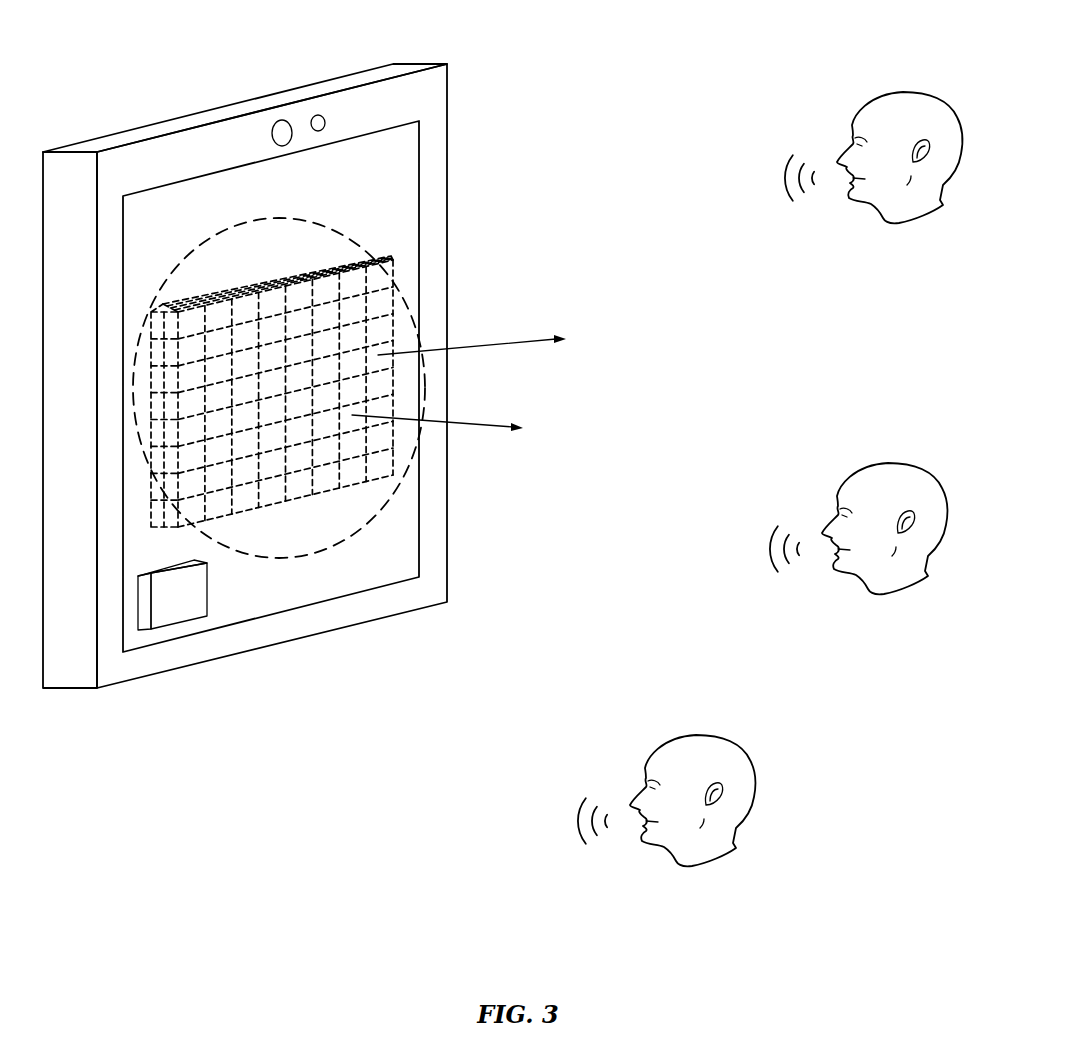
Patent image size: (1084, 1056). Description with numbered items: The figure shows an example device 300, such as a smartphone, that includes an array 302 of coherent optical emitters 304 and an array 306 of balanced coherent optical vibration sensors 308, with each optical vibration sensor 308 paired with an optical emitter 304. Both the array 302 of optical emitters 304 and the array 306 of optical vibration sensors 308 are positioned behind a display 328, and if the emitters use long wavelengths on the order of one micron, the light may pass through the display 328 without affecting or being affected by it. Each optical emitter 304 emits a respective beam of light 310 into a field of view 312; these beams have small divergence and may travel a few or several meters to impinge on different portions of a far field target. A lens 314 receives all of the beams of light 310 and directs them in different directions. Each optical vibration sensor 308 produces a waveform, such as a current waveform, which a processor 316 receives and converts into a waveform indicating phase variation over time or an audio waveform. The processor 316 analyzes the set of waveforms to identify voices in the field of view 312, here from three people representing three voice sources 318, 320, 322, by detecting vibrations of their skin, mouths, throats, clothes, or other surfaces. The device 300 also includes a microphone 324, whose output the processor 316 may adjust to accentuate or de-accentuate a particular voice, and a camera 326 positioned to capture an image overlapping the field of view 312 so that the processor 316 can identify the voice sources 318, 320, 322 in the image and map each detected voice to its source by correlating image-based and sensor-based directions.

The device 300 is at (166, 118).
The array of coherent optical emitters 302 is at (140, 403).
The coherent optical emitter 304 is at (150, 512).
The array of balanced coherent optical vibration sensors 306 is at (152, 433).
The balanced coherent optical vibration sensor 308 is at (164, 491).
The beam of light 310 is at (510, 341).
The field of view 312 is at (790, 391).
The lens 314 is at (140, 465).
The processor 316 is at (138, 600).
The voice source 318 is at (908, 90).
The voice source 320 is at (898, 462).
The voice source 322 is at (710, 733).
The microphone 324 is at (318, 114).
The camera 326 is at (282, 118).
The display 328 is at (420, 187).